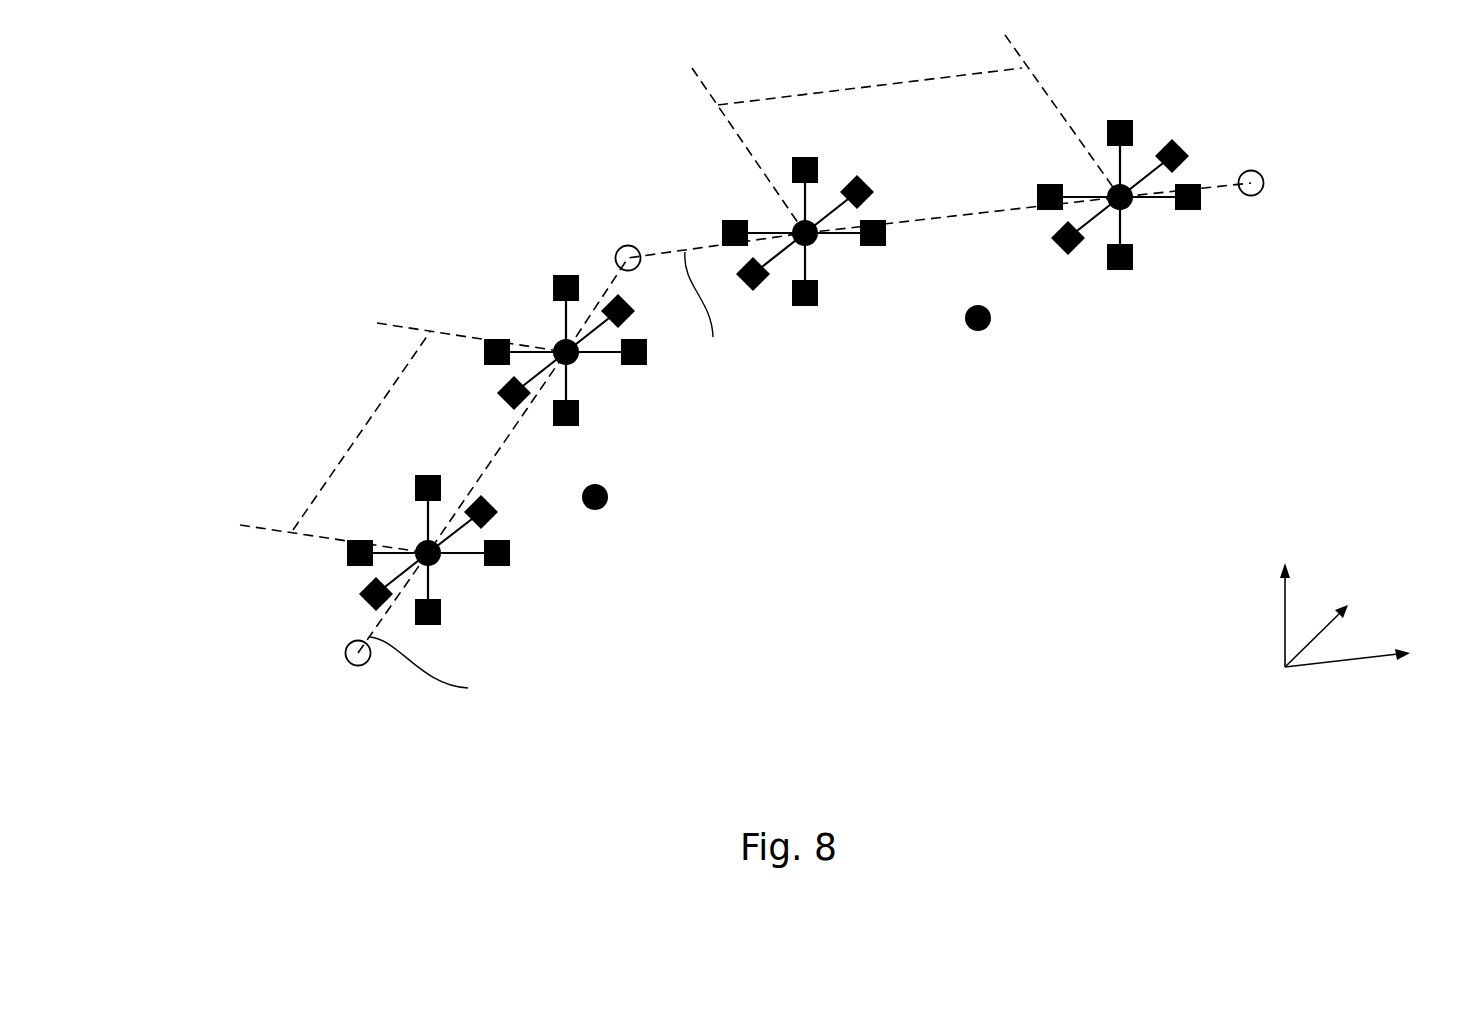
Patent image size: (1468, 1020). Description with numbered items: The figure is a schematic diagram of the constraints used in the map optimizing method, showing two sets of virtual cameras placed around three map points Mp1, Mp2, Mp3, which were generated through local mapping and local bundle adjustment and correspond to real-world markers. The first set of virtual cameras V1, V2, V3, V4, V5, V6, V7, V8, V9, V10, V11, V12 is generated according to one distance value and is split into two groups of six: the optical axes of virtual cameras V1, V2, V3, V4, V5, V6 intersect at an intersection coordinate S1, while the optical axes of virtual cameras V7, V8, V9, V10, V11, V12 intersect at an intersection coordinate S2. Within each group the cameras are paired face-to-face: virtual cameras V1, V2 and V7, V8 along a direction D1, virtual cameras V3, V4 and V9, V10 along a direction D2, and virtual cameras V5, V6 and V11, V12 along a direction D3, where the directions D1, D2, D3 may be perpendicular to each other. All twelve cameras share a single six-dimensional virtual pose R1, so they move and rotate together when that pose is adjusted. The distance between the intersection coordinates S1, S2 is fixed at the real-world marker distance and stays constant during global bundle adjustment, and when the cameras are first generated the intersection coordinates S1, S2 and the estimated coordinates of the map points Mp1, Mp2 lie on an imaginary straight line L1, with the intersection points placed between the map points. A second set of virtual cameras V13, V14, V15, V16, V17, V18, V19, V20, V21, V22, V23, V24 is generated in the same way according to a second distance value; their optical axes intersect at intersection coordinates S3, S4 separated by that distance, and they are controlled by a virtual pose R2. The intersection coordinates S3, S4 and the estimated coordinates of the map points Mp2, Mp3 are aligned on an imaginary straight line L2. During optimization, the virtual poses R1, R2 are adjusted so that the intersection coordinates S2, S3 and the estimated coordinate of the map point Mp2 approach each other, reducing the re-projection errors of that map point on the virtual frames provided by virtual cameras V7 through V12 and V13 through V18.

The intersection coordinate S1 is at (1119, 195).
The intersection coordinate S2 is at (804, 231).
The intersection coordinate S3 is at (565, 350).
The intersection coordinate S4 is at (428, 550).
The virtual camera V1 is at (1198, 212).
The virtual camera V2 is at (1049, 181).
The virtual camera V3 is at (1185, 149).
The virtual camera V4 is at (1056, 250).
The virtual camera V5 is at (1120, 117).
The virtual camera V6 is at (1120, 273).
The virtual camera V7 is at (893, 238).
The virtual camera V8 is at (732, 218).
The virtual camera V9 is at (869, 181).
The virtual camera V10 is at (747, 291).
The virtual camera V11 is at (808, 151).
The virtual camera V12 is at (813, 311).
The virtual camera V13 is at (648, 368).
The virtual camera V14 is at (495, 335).
The virtual camera V15 is at (643, 305).
The virtual camera V16 is at (493, 405).
The virtual camera V17 is at (567, 272).
The virtual camera V18 is at (573, 429).
The virtual camera V19 is at (526, 554).
The virtual camera V20 is at (333, 554).
The virtual camera V21 is at (506, 507).
The virtual camera V22 is at (354, 601).
The virtual camera V23 is at (430, 472).
The virtual camera V24 is at (432, 629).
The map point Mp1 is at (1318, 181).
The map point Mp2 is at (628, 234).
The map point Mp3 is at (357, 674).
The virtual pose R1 is at (982, 335).
The virtual pose R2 is at (617, 500).
The imaginary straight line L1 is at (707, 314).
The imaginary straight line L2 is at (439, 671).
The direction D1 is at (1371, 651).
The direction D2 is at (1338, 624).
The direction D3 is at (1283, 598).